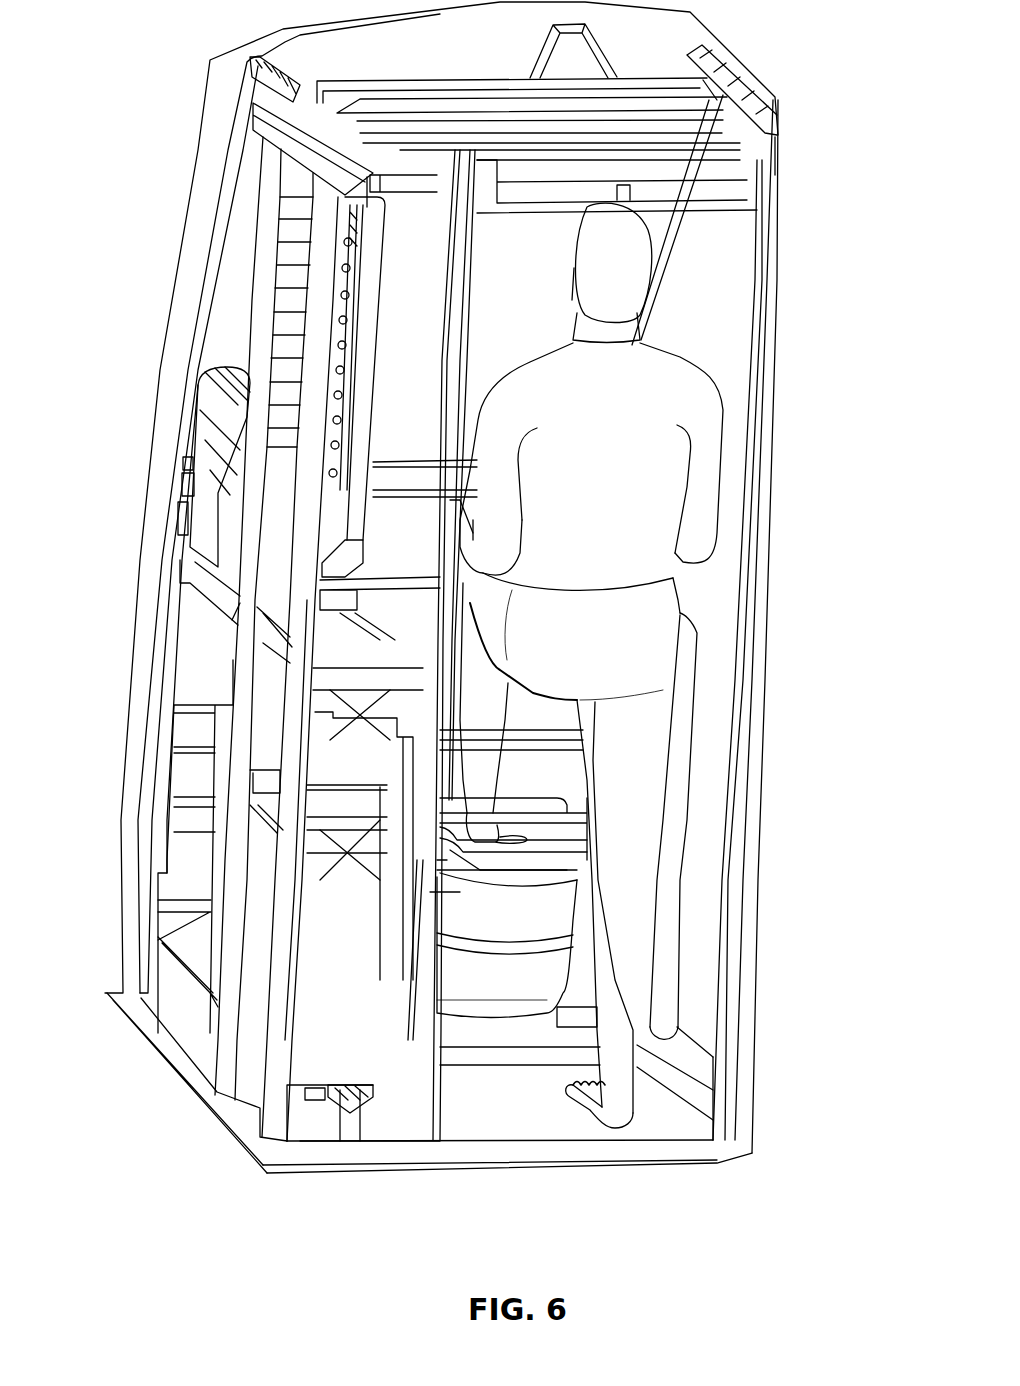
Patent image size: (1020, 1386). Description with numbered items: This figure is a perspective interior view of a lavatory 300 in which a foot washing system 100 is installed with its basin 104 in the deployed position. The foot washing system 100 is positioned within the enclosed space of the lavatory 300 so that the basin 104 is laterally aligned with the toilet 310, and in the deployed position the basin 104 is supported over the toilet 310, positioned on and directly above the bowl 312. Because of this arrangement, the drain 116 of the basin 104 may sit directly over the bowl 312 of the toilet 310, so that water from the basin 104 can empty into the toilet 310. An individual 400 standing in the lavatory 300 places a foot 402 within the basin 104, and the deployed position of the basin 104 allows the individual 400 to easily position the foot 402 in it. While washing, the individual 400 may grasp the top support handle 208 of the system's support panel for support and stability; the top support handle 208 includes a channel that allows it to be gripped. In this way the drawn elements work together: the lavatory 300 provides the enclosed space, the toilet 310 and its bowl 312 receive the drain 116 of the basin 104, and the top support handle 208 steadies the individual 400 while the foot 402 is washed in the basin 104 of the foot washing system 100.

The foot washing system 100 is at (686, 880).
The basin 104 is at (507, 863).
The drain 116 is at (443, 850).
The top support handle 208 is at (697, 635).
The lavatory 300 is at (174, 110).
The toilet 310 is at (527, 990).
The bowl 312 is at (430, 892).
The individual 400 is at (695, 415).
The foot 402 is at (463, 840).